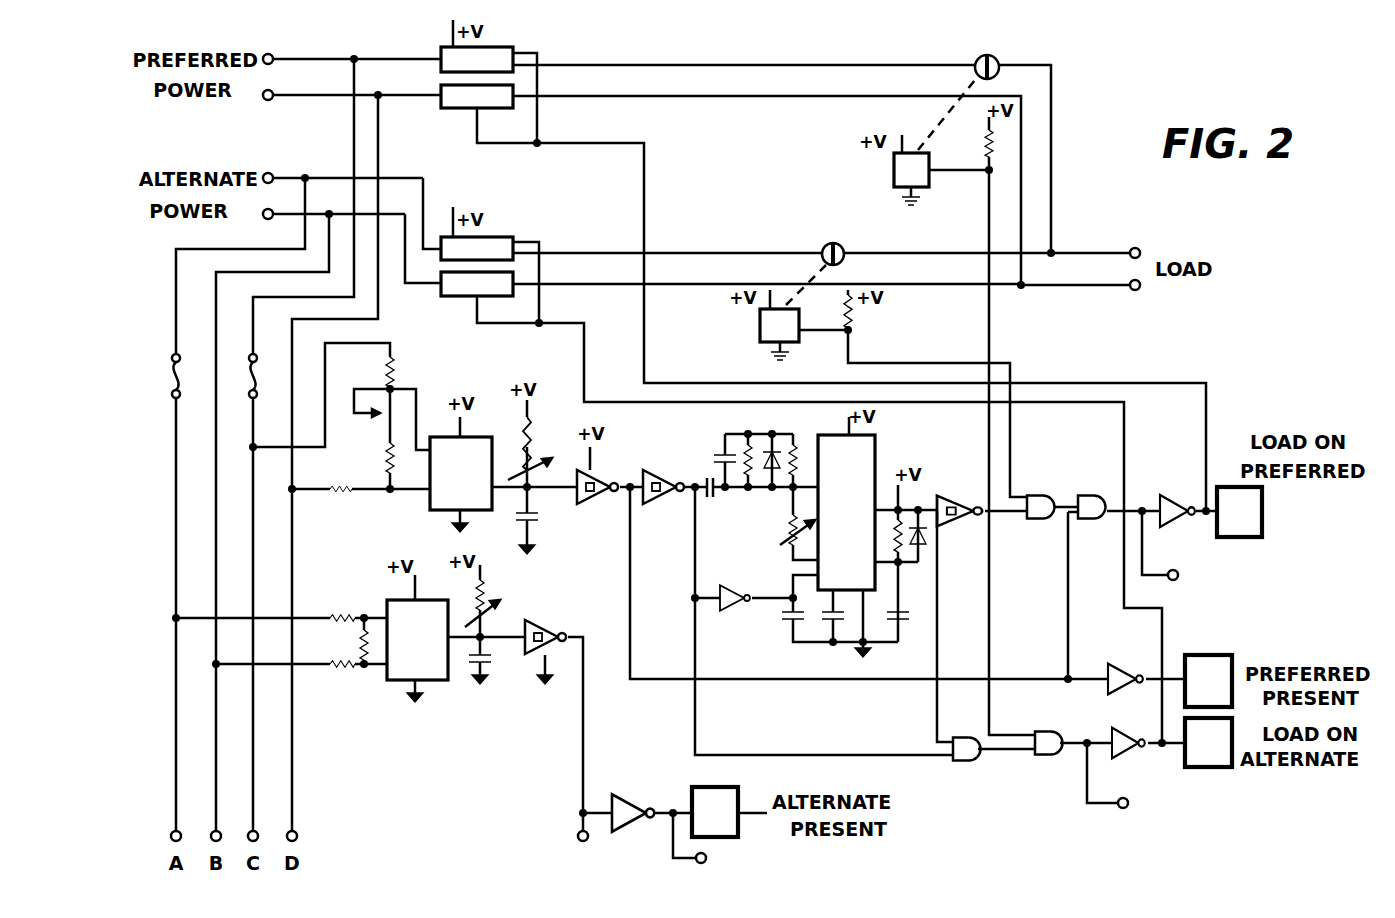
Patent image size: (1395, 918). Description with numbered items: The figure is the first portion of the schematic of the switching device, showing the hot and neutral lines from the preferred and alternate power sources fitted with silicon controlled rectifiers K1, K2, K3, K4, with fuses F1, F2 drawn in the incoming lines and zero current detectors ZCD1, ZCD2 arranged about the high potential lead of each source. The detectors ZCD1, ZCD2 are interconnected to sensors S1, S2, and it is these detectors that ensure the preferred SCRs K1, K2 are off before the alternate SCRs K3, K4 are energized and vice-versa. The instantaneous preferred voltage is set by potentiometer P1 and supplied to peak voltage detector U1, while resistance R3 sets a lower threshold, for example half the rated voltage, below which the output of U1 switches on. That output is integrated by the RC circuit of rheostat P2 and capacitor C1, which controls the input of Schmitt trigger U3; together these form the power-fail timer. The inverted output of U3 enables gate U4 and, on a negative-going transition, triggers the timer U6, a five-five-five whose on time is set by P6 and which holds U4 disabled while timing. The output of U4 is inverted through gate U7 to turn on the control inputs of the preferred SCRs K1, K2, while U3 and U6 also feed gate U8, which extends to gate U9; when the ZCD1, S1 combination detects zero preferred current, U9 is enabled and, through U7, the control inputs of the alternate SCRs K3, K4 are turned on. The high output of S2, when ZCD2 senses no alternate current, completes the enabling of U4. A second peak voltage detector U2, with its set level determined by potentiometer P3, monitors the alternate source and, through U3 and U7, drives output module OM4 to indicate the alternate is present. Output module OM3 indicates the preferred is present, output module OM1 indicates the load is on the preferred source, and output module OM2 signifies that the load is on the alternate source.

The silicon controlled rectifier K1 is at (477, 46).
The silicon controlled rectifier K2 is at (477, 96).
The silicon controlled rectifier K3 is at (477, 233).
The silicon controlled rectifier K4 is at (477, 284).
The fuse F1 is at (268, 376).
The fuse F2 is at (190, 376).
The zero current detector ZCD1 is at (989, 95).
The zero current detector ZCD2 is at (845, 267).
The sensor S1 is at (911, 166).
The sensor S2 is at (779, 321).
The potentiometer P1 is at (360, 377).
The rheostat P2 is at (550, 441).
The potentiometer P3 is at (508, 582).
The potentiometer P6 is at (757, 539).
The resistance R3 is at (343, 513).
The capacitor C1 is at (562, 520).
The peak voltage detector U1 is at (461, 473).
The peak voltage detector U2 is at (417, 640).
The Schmitt trigger U3 is at (745, 554).
The gate U4 is at (1065, 498).
The timer U6 is at (846, 512).
The gate U7 is at (904, 647).
The gate U8 is at (964, 739).
The gate U9 is at (1046, 732).
The output module OM1 is at (1239, 512).
The output module OM2 is at (1208, 742).
The output module OM3 is at (1208, 681).
The output module OM4 is at (715, 812).